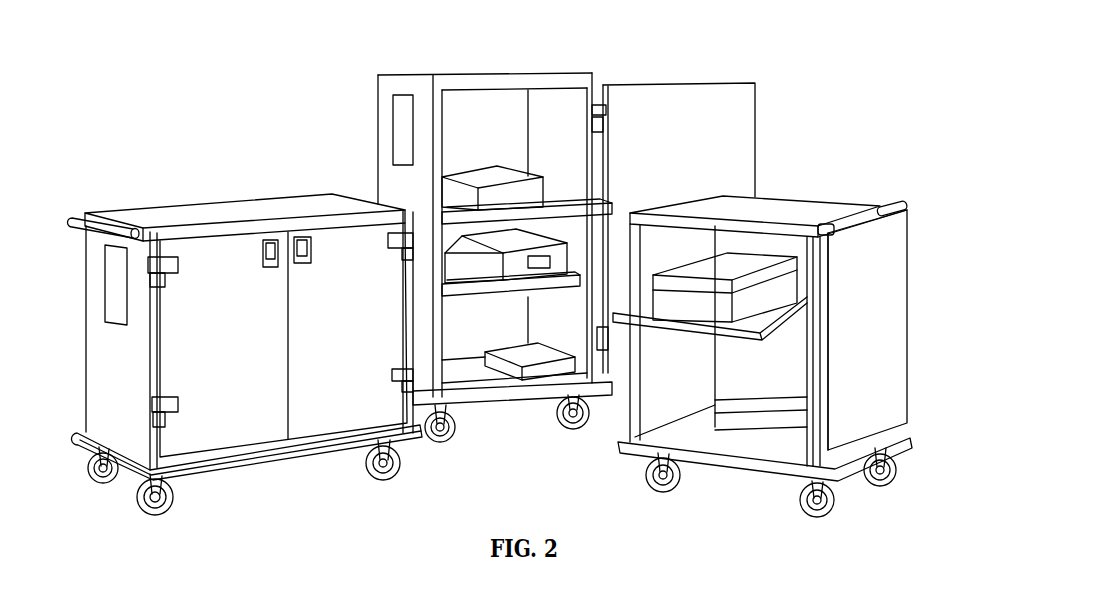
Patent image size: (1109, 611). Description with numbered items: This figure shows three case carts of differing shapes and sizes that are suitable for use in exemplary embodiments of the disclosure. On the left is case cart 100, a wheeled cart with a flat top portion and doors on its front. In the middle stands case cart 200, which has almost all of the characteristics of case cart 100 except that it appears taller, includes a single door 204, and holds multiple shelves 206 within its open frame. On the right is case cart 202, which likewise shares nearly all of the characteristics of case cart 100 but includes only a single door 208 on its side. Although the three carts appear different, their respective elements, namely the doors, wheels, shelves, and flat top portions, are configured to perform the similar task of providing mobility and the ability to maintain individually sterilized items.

The case cart 100 is at (176, 183).
The case cart 200 is at (516, 426).
The case cart 202 is at (866, 191).
The single door 204 is at (720, 123).
The shelves 206 is at (482, 367).
The single door 208 is at (883, 330).